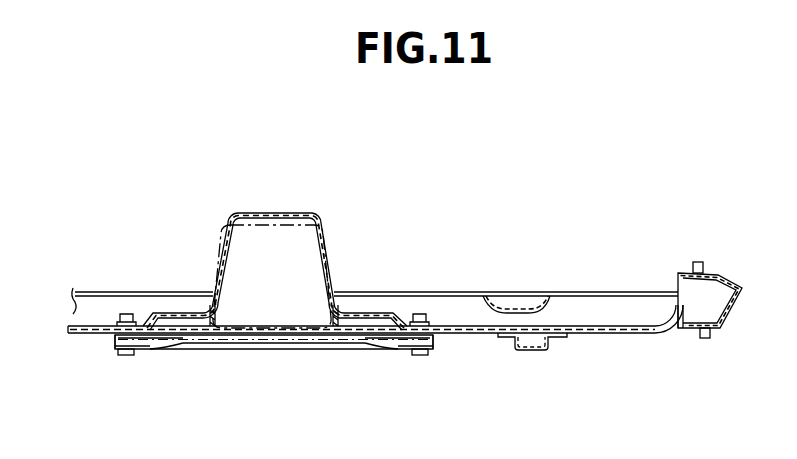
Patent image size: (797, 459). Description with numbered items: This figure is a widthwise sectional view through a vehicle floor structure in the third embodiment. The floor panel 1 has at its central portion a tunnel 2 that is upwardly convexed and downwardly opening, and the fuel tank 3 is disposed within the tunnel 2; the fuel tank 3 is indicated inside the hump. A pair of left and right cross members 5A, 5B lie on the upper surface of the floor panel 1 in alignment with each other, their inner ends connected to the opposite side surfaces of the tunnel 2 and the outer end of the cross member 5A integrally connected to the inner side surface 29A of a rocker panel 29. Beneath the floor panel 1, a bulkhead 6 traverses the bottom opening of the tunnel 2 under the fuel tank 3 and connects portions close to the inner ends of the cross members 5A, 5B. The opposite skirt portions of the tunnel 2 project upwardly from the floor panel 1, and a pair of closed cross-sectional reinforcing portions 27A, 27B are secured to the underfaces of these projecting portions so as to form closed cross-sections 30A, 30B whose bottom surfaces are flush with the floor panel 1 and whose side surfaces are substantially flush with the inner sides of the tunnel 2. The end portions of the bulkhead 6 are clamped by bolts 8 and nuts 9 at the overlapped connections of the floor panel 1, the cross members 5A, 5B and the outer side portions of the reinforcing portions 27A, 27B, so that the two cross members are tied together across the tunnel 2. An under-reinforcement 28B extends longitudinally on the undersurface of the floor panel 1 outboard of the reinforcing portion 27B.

The floor panel 1 is at (475, 334).
The tunnel 2 is at (270, 213).
The fuel tank 3 is at (316, 280).
The cross member 5A is at (578, 298).
The cross member 5B is at (103, 298).
The bulkhead 6 is at (288, 341).
The bolt 8 is at (127, 356).
The nut 9 is at (137, 313).
The closed cross-sectional reinforcing portion 27A is at (211, 336).
The closed cross-sectional reinforcing portion 27B is at (333, 336).
The under-reinforcement 28B is at (532, 351).
The rocker panel 29 is at (739, 281).
The inner side surface 29A is at (687, 333).
The closed cross-section 30A is at (184, 340).
The closed cross-section 30B is at (377, 337).